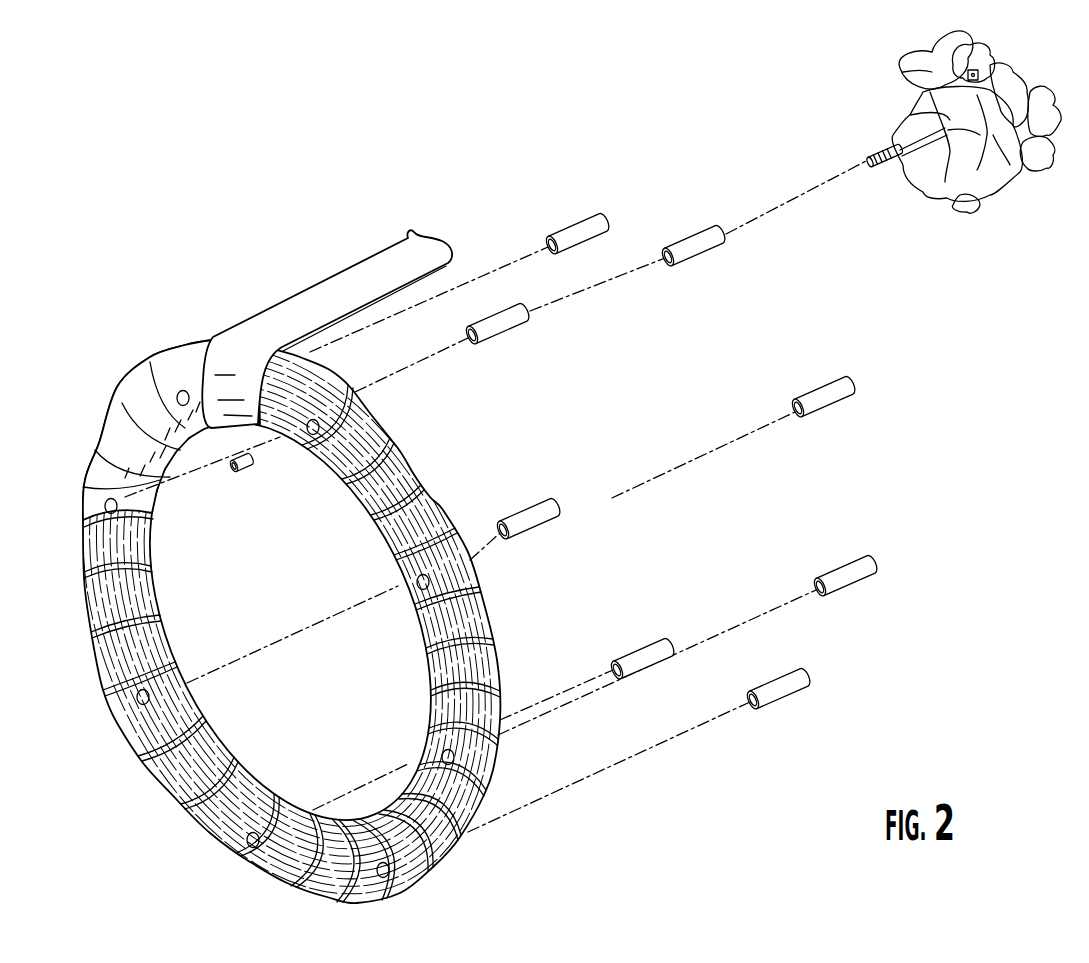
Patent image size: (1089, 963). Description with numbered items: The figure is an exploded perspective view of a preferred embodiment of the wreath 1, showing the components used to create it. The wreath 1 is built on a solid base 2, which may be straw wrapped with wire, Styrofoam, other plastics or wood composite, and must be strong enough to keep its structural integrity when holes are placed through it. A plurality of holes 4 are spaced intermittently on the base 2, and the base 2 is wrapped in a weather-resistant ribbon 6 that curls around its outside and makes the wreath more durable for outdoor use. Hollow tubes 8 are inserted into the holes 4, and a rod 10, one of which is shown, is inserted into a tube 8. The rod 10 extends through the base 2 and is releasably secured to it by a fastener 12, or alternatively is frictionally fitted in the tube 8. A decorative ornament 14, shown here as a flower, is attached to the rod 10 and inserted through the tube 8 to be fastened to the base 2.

The wreath 1 is at (142, 302).
The base 2 is at (412, 456).
The holes 4 is at (177, 400).
The weather-resistant ribbon 6 is at (302, 292).
The hollow tubes 8 is at (556, 235).
The rod 10 is at (873, 148).
The fastener 12 is at (237, 476).
The decorative ornament 14 is at (1012, 183).